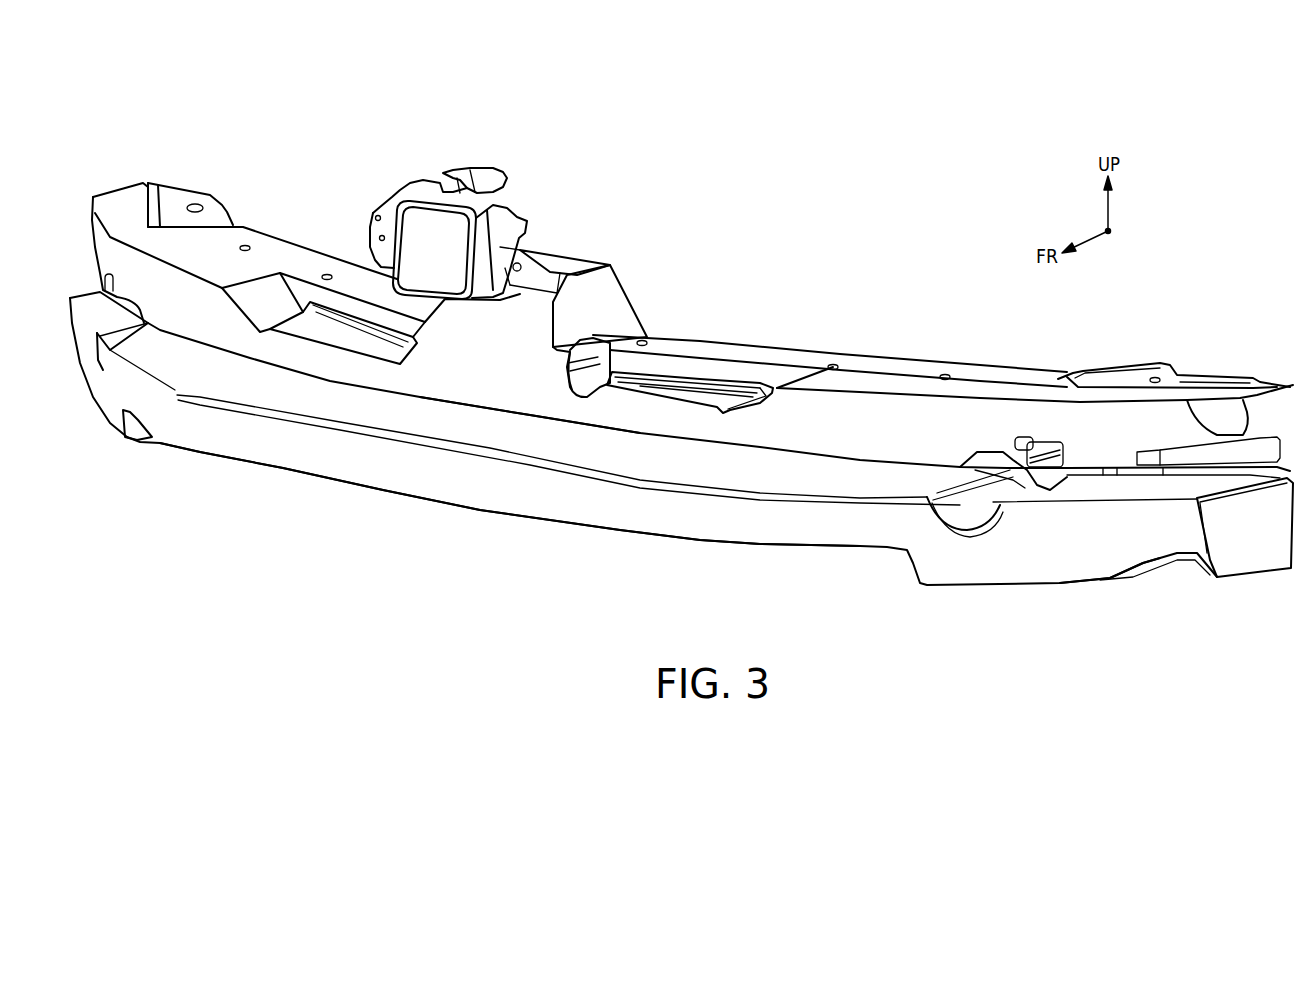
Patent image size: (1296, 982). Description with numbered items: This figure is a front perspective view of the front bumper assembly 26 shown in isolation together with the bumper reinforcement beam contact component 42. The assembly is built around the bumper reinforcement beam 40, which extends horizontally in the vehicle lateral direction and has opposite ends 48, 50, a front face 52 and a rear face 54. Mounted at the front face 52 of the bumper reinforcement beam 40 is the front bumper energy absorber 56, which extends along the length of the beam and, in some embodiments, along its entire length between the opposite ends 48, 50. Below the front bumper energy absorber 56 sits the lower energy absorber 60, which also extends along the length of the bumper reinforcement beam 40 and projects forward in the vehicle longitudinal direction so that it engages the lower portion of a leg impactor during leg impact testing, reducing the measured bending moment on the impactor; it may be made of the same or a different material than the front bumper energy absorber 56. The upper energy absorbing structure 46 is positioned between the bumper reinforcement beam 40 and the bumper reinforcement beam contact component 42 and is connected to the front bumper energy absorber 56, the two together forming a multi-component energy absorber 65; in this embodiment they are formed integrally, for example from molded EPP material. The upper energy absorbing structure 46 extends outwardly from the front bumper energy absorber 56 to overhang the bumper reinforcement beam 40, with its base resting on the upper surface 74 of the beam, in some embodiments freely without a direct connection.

The front bumper assembly 26 is at (764, 116).
The bumper reinforcement beam 40 is at (275, 238).
The bumper reinforcement beam contact component 42 is at (489, 162).
The upper energy absorbing structure 46 is at (570, 242).
The opposite end 48 is at (163, 185).
The opposite end 50 is at (1253, 373).
The front face 52 is at (625, 360).
The rear face 54 is at (860, 354).
The front bumper energy absorber 56 is at (763, 437).
The lower energy absorber 60 is at (813, 547).
The multi-component energy absorber 65 is at (521, 415).
The upper surface 74 is at (715, 357).